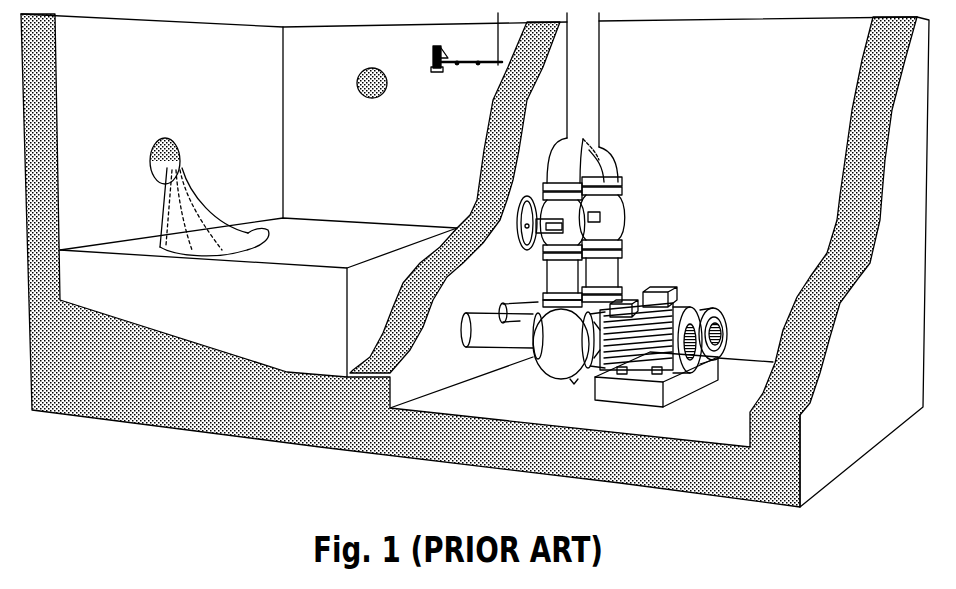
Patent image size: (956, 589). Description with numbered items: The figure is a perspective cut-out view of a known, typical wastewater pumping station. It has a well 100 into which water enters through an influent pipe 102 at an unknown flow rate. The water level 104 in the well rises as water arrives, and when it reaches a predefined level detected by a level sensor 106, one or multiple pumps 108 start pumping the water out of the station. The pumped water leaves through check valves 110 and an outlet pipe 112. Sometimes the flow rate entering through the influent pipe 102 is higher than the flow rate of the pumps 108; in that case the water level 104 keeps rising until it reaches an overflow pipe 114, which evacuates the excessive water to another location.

The well 100 is at (143, 30).
The influent pipe 102 is at (182, 167).
The water level 104 is at (300, 218).
The level sensor 106 is at (433, 62).
The pumps 108 is at (567, 360).
The check valves 110 is at (613, 225).
The outlet pipe 112 is at (600, 87).
The overflow pipe 114 is at (372, 88).